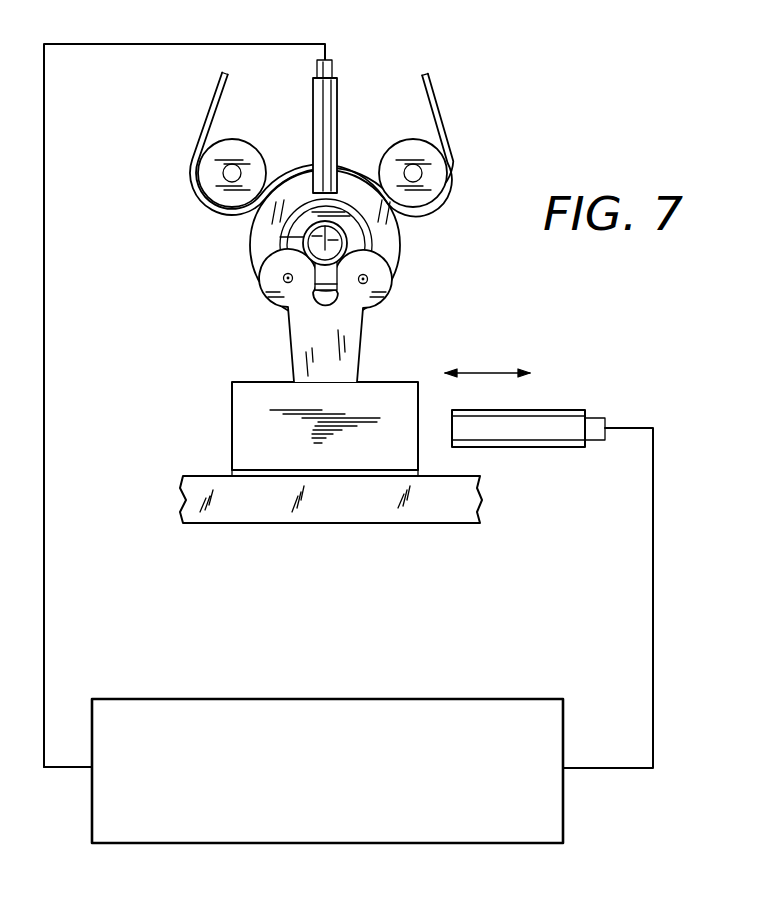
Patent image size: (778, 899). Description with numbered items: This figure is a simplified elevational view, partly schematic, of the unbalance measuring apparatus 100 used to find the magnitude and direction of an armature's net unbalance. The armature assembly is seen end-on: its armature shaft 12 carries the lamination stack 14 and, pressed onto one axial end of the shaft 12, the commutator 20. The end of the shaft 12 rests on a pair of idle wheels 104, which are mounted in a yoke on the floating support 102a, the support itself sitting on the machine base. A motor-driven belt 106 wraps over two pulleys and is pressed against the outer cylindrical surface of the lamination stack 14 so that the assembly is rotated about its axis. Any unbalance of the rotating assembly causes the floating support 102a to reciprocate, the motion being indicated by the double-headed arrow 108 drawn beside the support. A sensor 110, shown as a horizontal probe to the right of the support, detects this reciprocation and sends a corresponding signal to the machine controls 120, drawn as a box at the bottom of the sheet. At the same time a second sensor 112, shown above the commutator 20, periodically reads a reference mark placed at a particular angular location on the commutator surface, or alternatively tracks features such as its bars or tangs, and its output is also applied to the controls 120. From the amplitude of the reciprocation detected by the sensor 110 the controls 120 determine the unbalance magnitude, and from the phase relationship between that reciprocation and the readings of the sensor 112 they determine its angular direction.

The armature shaft 12 is at (305, 240).
The lamination stack 14 is at (388, 252).
The commutator 20 is at (372, 236).
The unbalance measuring apparatus 100 is at (518, 361).
The floating support 102a is at (240, 427).
The idle wheels 104 is at (277, 305).
The motor-driven belt 106 is at (442, 122).
The double-headed arrow 108 is at (494, 370).
The sensor 110 is at (563, 412).
The sensor 112 is at (323, 105).
The machine controls 120 is at (397, 698).